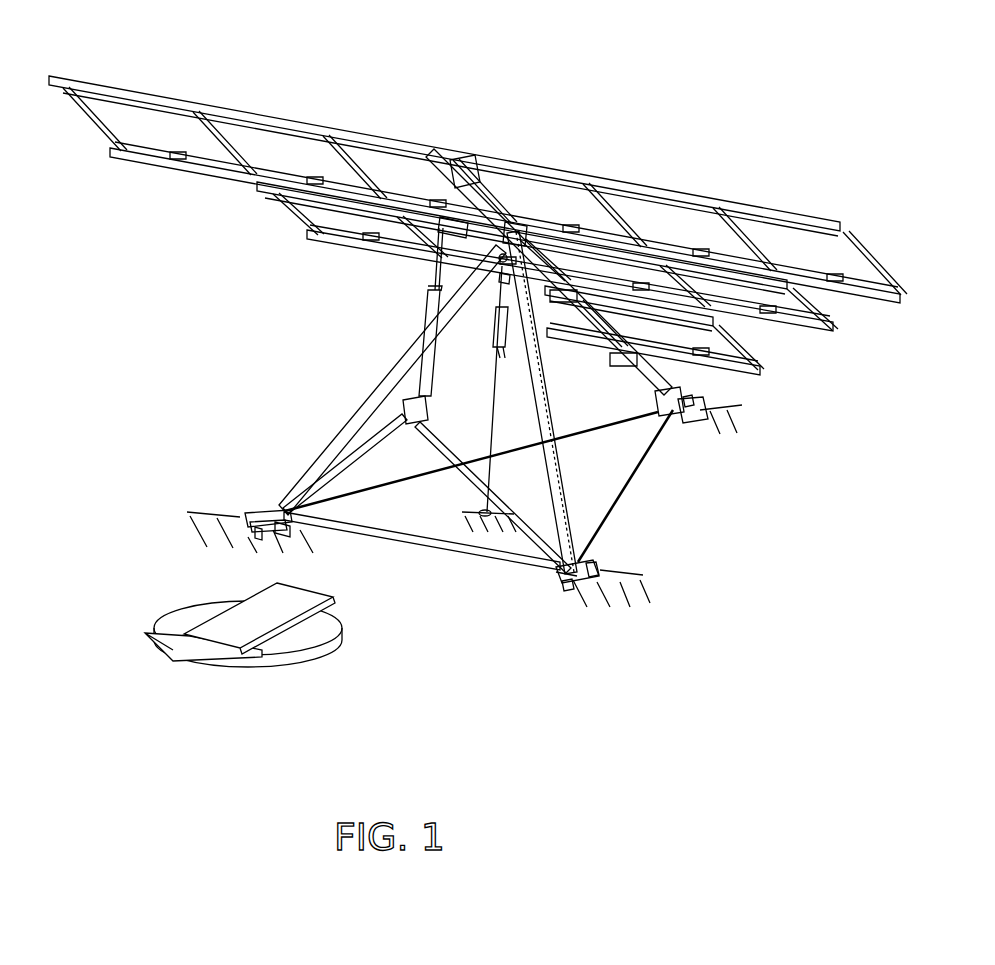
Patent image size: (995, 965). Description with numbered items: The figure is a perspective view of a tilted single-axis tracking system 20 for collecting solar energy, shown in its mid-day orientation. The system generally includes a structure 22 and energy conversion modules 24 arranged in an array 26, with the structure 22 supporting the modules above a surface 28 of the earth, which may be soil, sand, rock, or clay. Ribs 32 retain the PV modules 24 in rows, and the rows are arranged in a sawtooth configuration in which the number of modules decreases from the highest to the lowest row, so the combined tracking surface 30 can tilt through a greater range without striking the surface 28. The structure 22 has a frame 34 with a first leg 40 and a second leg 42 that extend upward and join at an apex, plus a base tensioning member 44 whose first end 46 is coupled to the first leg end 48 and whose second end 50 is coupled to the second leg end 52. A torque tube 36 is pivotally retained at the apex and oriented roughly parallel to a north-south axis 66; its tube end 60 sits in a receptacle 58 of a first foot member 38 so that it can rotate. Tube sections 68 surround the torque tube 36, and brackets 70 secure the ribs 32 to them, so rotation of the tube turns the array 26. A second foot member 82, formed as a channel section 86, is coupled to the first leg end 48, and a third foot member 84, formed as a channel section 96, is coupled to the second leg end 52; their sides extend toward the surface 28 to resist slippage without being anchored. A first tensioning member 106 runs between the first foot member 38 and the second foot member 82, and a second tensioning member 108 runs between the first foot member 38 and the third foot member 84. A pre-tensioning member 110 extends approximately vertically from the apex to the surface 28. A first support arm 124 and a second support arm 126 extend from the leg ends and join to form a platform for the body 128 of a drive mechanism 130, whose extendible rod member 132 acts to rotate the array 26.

The tilted single-axis tracking system 20 is at (664, 755).
The structure 22 is at (255, 369).
The energy conversion modules 24 is at (783, 237).
The array 26 is at (243, 69).
The surface 28 is at (457, 507).
The tracking surface 30 is at (571, 146).
The ribs 32 is at (338, 133).
The frame 34 is at (453, 598).
The torque tube 36 is at (670, 372).
The first foot member 38 is at (697, 417).
The first leg 40 is at (563, 464).
The second leg 42 is at (333, 437).
The base tensioning member 44 is at (388, 537).
The first end 46 is at (555, 577).
The first leg end 48 is at (573, 533).
The second end 50 is at (297, 530).
The second leg end 52 is at (275, 507).
The receptacle 58 is at (650, 392).
The tube end 60 is at (715, 384).
The north-south axis 66 is at (100, 707).
The tube sections 68 is at (470, 170).
The brackets 70 is at (450, 167).
The second foot member 82 is at (592, 547).
The third foot member 84 is at (252, 522).
The channel section 86 is at (570, 580).
The channel section 96 is at (257, 537).
The first tensioning member 106 is at (637, 481).
The second tensioning member 108 is at (568, 437).
The pre-tensioning member 110 is at (493, 367).
The first support arm 124 is at (514, 488).
The second support arm 126 is at (378, 446).
The body 128 is at (432, 345).
The drive mechanism 130 is at (408, 372).
The rod member 132 is at (430, 257).